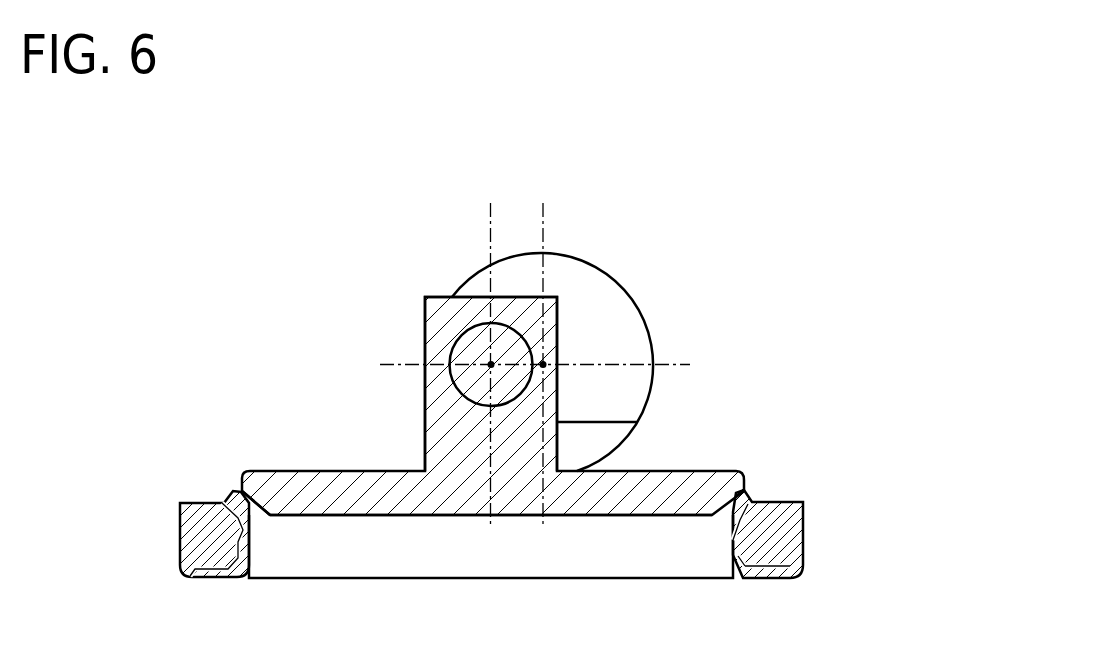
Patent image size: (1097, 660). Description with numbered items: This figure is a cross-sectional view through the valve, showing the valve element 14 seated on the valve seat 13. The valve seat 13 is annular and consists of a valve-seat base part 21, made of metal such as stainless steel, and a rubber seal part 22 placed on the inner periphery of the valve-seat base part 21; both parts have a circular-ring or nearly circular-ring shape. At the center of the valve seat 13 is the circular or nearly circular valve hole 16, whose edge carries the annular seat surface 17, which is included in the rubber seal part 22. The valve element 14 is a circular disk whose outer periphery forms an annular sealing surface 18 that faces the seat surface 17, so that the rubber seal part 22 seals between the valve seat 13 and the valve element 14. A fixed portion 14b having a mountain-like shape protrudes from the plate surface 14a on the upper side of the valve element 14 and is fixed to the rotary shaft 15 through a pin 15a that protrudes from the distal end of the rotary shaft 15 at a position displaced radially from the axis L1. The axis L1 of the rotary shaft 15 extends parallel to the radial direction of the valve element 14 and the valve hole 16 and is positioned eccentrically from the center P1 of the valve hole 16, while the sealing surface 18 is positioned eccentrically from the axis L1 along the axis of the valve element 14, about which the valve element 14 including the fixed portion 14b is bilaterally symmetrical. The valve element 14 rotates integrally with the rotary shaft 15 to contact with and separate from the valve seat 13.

The valve seat 13 is at (803, 508).
The valve element 14 is at (663, 471).
The plate surface 14a is at (323, 471).
The fixed portion 14b is at (447, 418).
The rotary shaft 15 is at (601, 266).
The pin 15a is at (453, 338).
The valve hole 16 is at (403, 565).
The seat surface 17 is at (248, 493).
The sealing surface 18 is at (232, 496).
The valve-seat base part 21 is at (787, 553).
The rubber seal part 22 is at (733, 545).
The axis of the rotary shaft L1 is at (557, 341).
The center of the valve hole P1 is at (490, 207).